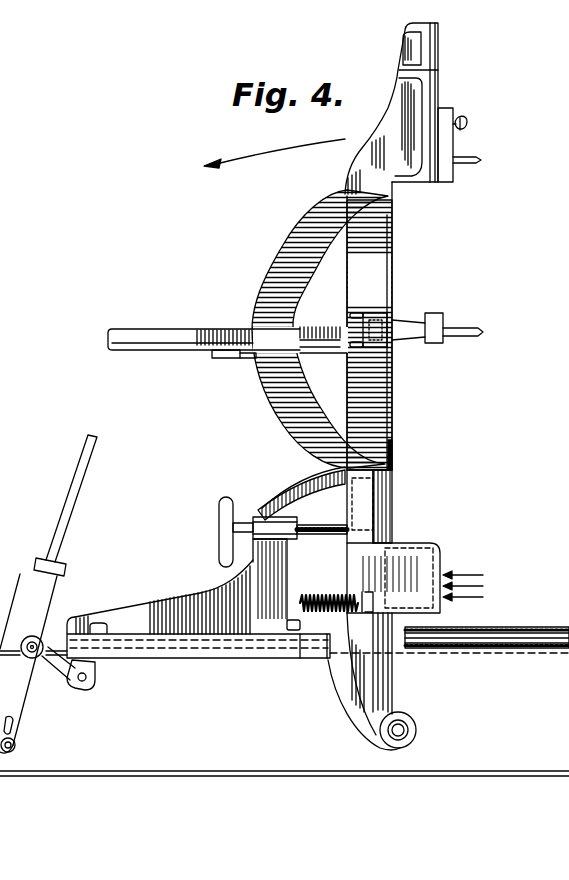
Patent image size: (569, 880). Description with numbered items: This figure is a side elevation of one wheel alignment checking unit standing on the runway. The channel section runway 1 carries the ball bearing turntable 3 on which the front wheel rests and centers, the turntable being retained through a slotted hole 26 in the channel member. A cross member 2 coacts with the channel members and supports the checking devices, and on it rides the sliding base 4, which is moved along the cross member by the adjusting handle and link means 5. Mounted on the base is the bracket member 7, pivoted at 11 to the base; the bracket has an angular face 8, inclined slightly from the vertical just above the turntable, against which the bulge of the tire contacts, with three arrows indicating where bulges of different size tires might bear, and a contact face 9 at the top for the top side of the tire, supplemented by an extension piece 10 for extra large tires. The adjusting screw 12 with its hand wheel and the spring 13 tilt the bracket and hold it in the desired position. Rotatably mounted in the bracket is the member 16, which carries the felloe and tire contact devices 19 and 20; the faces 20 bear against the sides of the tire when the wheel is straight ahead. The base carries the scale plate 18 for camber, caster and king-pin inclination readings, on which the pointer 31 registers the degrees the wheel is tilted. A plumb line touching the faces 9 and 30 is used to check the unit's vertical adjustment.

The channel section runway 1 is at (500, 652).
The cross member 2 is at (162, 733).
The ball bearing turntable 3 is at (535, 627).
The sliding base 4 is at (213, 647).
The adjusting handle and link means 5 is at (43, 598).
The bracket member 7 is at (360, 481).
The angular face 8 is at (442, 568).
The contact face 9 is at (440, 98).
The extension piece 10 is at (433, 43).
The pivot 11 is at (402, 727).
The adjusting screw 12 is at (317, 528).
The spring 13 is at (322, 594).
The rotatable member 16 is at (375, 270).
The scale plate 18 is at (283, 493).
The felloe contact device 19 is at (477, 158).
The tire contact device 20 is at (433, 343).
The slotted hole 26 is at (8, 385).
The face 30 is at (435, 546).
The pointer 31 is at (340, 470).